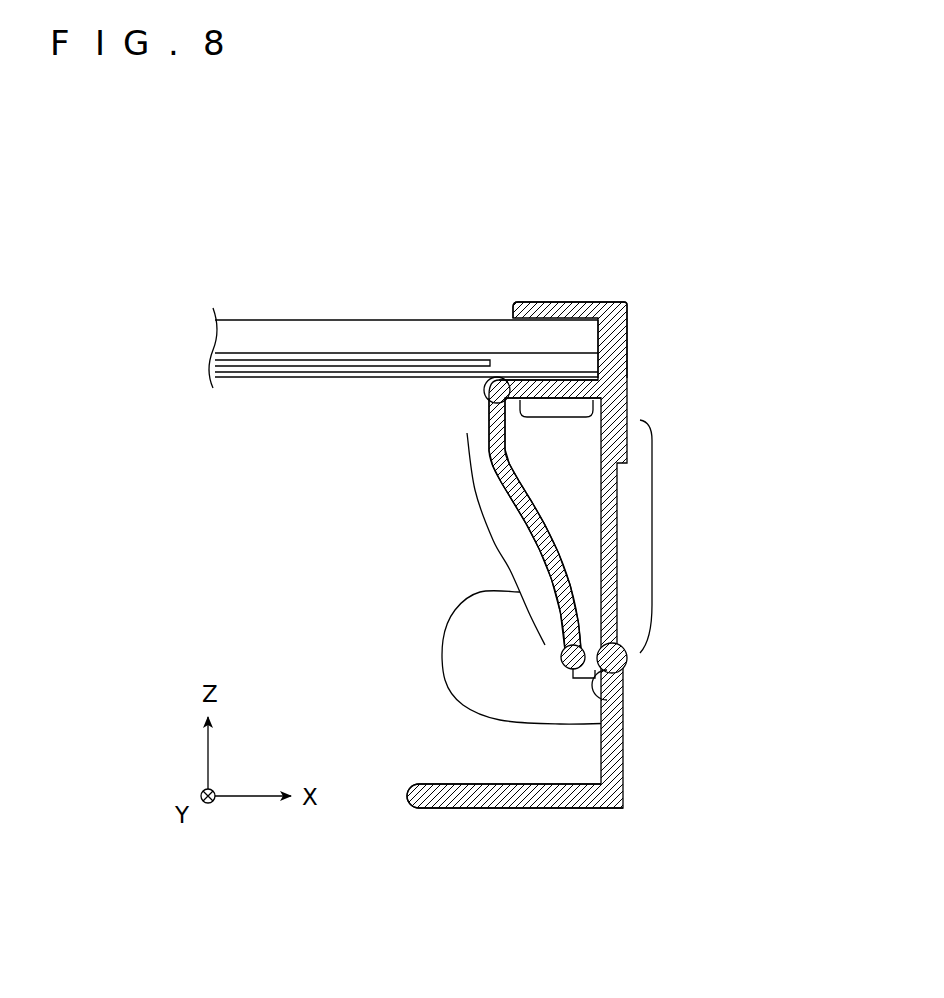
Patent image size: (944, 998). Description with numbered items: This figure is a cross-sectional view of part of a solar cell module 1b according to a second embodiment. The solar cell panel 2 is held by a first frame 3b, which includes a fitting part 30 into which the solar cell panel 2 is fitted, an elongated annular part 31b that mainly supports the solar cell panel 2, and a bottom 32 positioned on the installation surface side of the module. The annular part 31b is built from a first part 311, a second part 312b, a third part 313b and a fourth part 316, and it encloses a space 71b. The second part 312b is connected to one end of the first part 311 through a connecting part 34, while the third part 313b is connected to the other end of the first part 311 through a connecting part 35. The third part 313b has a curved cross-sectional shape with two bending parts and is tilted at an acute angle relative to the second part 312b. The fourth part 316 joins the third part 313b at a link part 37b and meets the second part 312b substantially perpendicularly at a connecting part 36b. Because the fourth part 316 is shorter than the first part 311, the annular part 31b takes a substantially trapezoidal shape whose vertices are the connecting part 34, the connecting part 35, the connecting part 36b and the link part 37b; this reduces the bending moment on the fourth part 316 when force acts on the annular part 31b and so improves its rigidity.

The solar cell module 1b is at (200, 286).
The solar cell panel 2 is at (362, 314).
The first frame 3b is at (627, 315).
The fitting part 30 is at (613, 348).
The annular part 31b is at (787, 405).
The first part 311 is at (555, 420).
The second part 312b is at (652, 523).
The third part 313b is at (623, 723).
The fourth part 316 is at (623, 705).
The bottom 32 is at (562, 808).
The connecting part 34 is at (627, 378).
The connecting part 35 is at (486, 392).
The connecting part 36b is at (628, 660).
The link part 37b is at (561, 657).
The space 71b is at (520, 441).